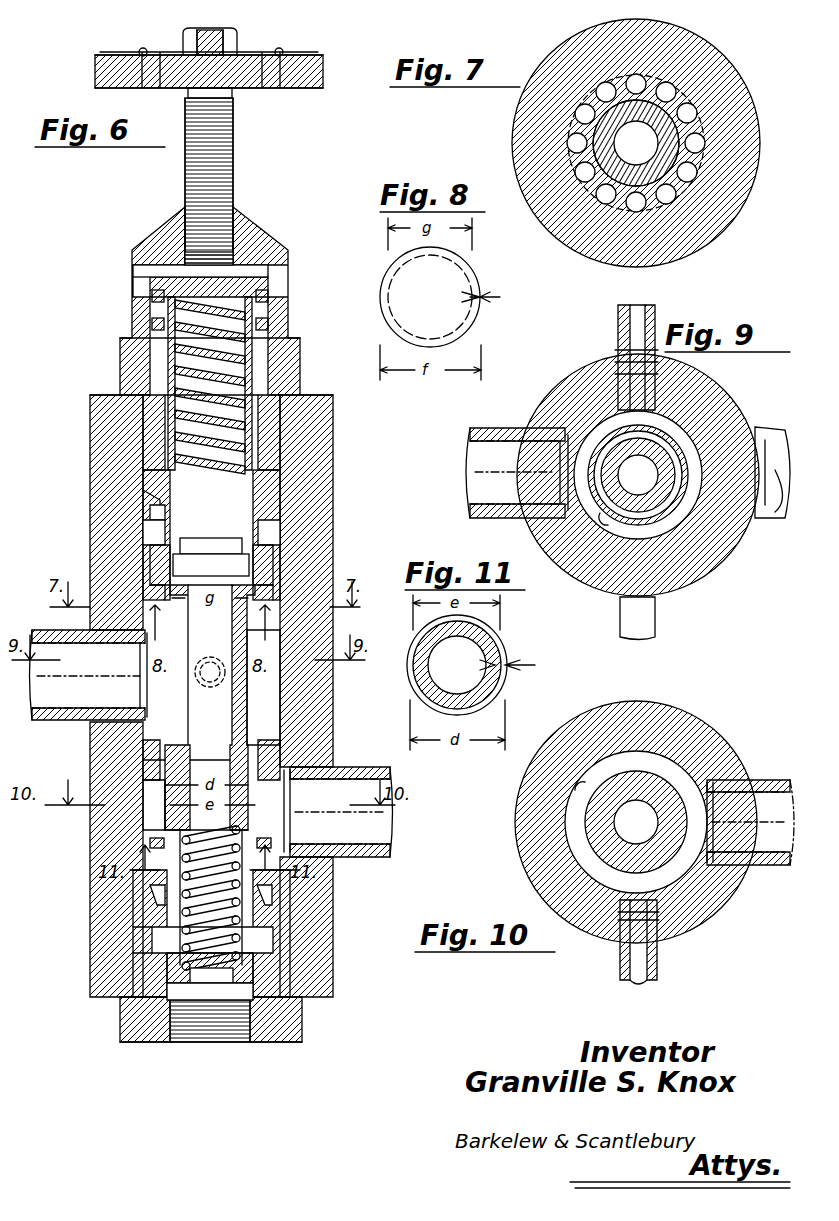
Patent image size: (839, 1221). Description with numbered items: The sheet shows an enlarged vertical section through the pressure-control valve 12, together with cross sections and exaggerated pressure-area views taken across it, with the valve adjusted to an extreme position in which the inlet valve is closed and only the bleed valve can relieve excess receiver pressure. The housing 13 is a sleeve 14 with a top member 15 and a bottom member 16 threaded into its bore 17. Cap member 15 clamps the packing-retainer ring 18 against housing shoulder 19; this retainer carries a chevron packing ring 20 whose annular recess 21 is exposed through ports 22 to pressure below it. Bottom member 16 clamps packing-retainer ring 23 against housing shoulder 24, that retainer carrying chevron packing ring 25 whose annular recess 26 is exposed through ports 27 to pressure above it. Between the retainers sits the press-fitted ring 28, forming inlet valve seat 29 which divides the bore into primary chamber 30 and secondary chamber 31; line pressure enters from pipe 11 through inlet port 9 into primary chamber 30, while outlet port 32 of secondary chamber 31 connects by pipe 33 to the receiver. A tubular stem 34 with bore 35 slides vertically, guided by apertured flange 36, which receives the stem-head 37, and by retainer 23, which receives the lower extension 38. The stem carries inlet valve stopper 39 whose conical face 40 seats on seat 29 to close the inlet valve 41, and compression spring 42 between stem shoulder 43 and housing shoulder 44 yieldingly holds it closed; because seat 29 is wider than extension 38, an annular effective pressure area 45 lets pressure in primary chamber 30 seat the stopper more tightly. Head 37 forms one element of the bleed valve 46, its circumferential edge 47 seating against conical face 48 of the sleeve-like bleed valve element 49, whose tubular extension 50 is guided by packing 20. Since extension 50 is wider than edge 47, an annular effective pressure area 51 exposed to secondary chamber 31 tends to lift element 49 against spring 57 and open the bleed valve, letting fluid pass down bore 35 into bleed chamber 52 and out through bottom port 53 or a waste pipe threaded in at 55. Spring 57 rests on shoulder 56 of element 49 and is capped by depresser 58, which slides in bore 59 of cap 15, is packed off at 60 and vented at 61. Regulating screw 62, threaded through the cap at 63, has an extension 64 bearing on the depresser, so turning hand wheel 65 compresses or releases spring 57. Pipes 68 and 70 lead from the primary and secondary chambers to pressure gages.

In FIG. 6, the inlet port 9 is at (345, 818).
In FIG. 10, the inlet port 9 is at (700, 765).
In FIG. 6, the inlet pipe 11 is at (345, 764).
In FIG. 9, the inlet pipe 11 is at (772, 520).
In FIG. 10, the inlet pipe 11 is at (775, 780).
In FIG. 6, the valve 12 is at (85, 400).
In FIG. 6, the housing 13 is at (95, 440).
In FIG. 6, the sleeve 14 is at (320, 490).
In FIG. 7, the sleeve 14 is at (530, 138).
In FIG. 9, the sleeve 14 is at (575, 365).
In FIG. 10, the sleeve 14 is at (605, 720).
In FIG. 6, the top member 15 is at (292, 365).
In FIG. 6, the bottom member 16 is at (290, 1042).
In FIG. 6, the bore of the sleeve 17 is at (148, 800).
In FIG. 7, the bore of the sleeve 17 is at (710, 162).
In FIG. 9, the bore of the sleeve 17 is at (585, 580).
In FIG. 10, the bore of the sleeve 17 is at (578, 790).
In FIG. 6, the packing-retainer ring 18 is at (282, 480).
In FIG. 6, the housing shoulder 19 is at (285, 530).
In FIG. 6, the chevron packing ring 20 is at (148, 500).
In FIG. 6, the annular recess 21 is at (150, 512).
In FIG. 6, the ports 22 is at (150, 530).
In FIG. 6, the packing-retainer ring 23 is at (150, 900).
In FIG. 6, the housing shoulder 24 is at (288, 900).
In FIG. 6, the chevron packing ring 25 is at (160, 935).
In FIG. 6, the lower gland ring 26 is at (275, 895).
In FIG. 6, the ports 27 is at (140, 895).
In FIG. 6, the press-fitted ring 28 is at (140, 760).
In FIG. 9, the press-fitted ring 28 is at (590, 440).
In FIG. 6, the inlet valve seat 29 is at (280, 760).
In FIG. 11, the inlet valve seat 29 is at (412, 655).
In FIG. 6, the primary chamber 30 is at (160, 815).
In FIG. 10, the primary chamber 30 is at (685, 862).
In FIG. 6, the secondary chamber 31 is at (270, 690).
In FIG. 9, the secondary chamber 31 is at (660, 440).
In FIG. 6, the outlet port 32 is at (175, 670).
In FIG. 9, the outlet port 32 is at (565, 478).
In FIG. 6, the outlet pipe 33 is at (40, 725).
In FIG. 9, the outlet pipe 33 is at (480, 425).
In FIG. 6, the tubular stem 34 is at (250, 725).
In FIG. 9, the tubular stem 34 is at (655, 490).
In FIG. 6, the stem bore 35 is at (210, 707).
In FIG. 7, the stem bore 35 is at (636, 143).
In FIG. 9, the stem bore 35 is at (638, 475).
In FIG. 10, the stem bore 35 is at (636, 822).
In FIG. 6, the apertured flange 36 is at (232, 642).
In FIG. 7, the apertured flange 36 is at (648, 205).
In FIG. 6, the stem-head 37 is at (250, 620).
In FIG. 7, the stem-head 37 is at (610, 118).
In FIG. 6, the lower extension of the stem 38 is at (265, 935).
In FIG. 11, the lower extension of the stem 38 is at (430, 680).
In FIG. 6, the inlet valve stopper 39 is at (245, 755).
In FIG. 10, the inlet valve stopper 39 is at (650, 857).
In FIG. 6, the conical face 40 is at (263, 687).
In FIG. 6, the inlet valve 41 is at (150, 755).
In FIG. 6, the compression spring 42 is at (195, 975).
In FIG. 6, the stem shoulder 43 is at (206, 822).
In FIG. 6, the housing shoulder 44 is at (262, 1000).
In FIG. 6, the annular effective pressure area 45 is at (305, 840).
In FIG. 11, the annular effective pressure area 45 is at (500, 628).
In FIG. 6, the bleed valve 46 is at (211, 544).
In FIG. 6, the circumferential edge of the stem head 47 is at (211, 565).
In FIG. 8, the circumferential edge of the stem head 47 is at (392, 305).
In FIG. 6, the conical face 48 is at (155, 560).
In FIG. 6, the bleed valve element 49 is at (275, 575).
In FIG. 6, the tubular extension 50 is at (265, 440).
In FIG. 8, the tubular extension 50 is at (478, 290).
In FIG. 6, the annular effective pressure area 51 is at (300, 595).
In FIG. 8, the annular effective pressure area 51 is at (441, 328).
In FIG. 6, the bleed chamber 52 is at (180, 965).
In FIG. 6, the bottom port 53 is at (205, 990).
In FIG. 6, the threaded connection 55 is at (220, 1015).
In FIG. 6, the shoulder 56 is at (270, 560).
In FIG. 6, the compression spring 57 is at (185, 390).
In FIG. 6, the depresser 58 is at (260, 290).
In FIG. 6, the bore of housing cap 59 is at (258, 355).
In FIG. 6, the packing 60 is at (150, 295).
In FIG. 6, the vent 61 is at (135, 270).
In FIG. 6, the regulating screw 62 is at (222, 165).
In FIG. 6, the threaded portion 63 is at (183, 235).
In FIG. 6, the extension 64 is at (188, 258).
In FIG. 6, the hand wheel 65 is at (297, 55).
In FIG. 9, the gage pipe 68 is at (650, 615).
In FIG. 10, the gage pipe 68 is at (618, 962).
In FIG. 9, the gage pipe 70 is at (618, 322).